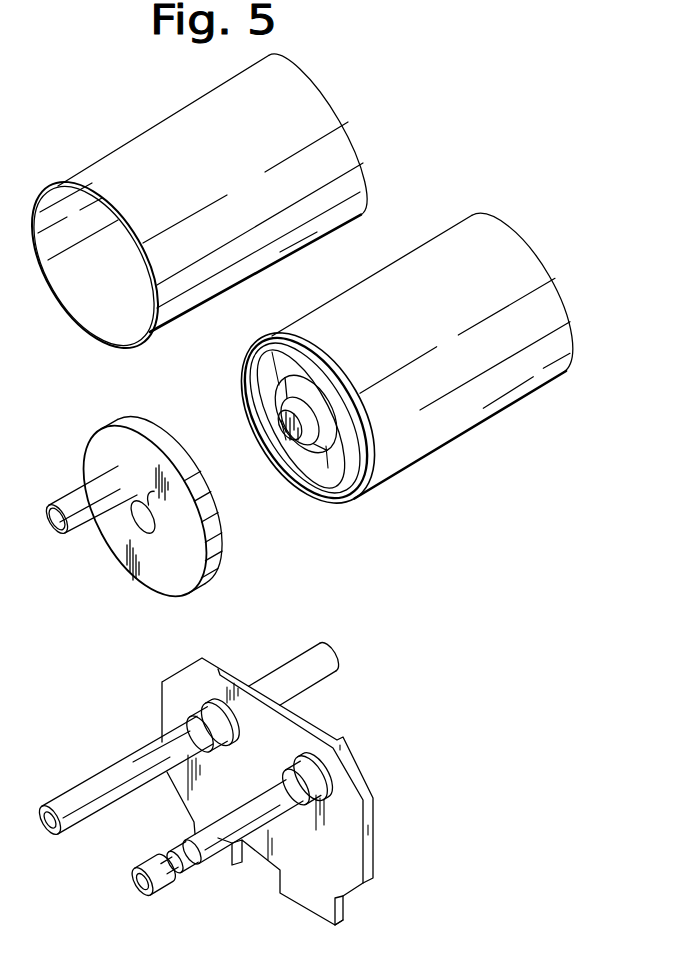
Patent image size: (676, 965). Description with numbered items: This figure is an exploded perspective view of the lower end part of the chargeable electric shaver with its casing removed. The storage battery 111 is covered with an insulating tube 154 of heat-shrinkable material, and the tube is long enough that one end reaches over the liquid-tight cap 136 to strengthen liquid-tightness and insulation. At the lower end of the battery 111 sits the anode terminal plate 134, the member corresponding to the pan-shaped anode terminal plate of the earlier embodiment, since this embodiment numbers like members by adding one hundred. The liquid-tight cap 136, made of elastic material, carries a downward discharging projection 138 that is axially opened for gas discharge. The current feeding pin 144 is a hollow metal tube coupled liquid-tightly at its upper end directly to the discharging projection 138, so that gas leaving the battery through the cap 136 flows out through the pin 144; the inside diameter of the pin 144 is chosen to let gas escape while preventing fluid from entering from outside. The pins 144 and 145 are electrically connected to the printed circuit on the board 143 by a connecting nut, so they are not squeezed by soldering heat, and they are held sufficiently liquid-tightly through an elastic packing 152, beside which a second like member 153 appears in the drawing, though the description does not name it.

The outer tube / sleeve 154 is at (360, 180).
The cylindrical housing 111 is at (393, 370).
The central hub / boss 134 is at (330, 440).
The end disk 136 is at (188, 547).
The tube 138 is at (80, 532).
The bracket plate 143 is at (350, 852).
The rod 144 is at (108, 777).
The rod with knob 145 is at (218, 845).
The bushing 152 is at (233, 718).
The bushing 153 is at (303, 778).